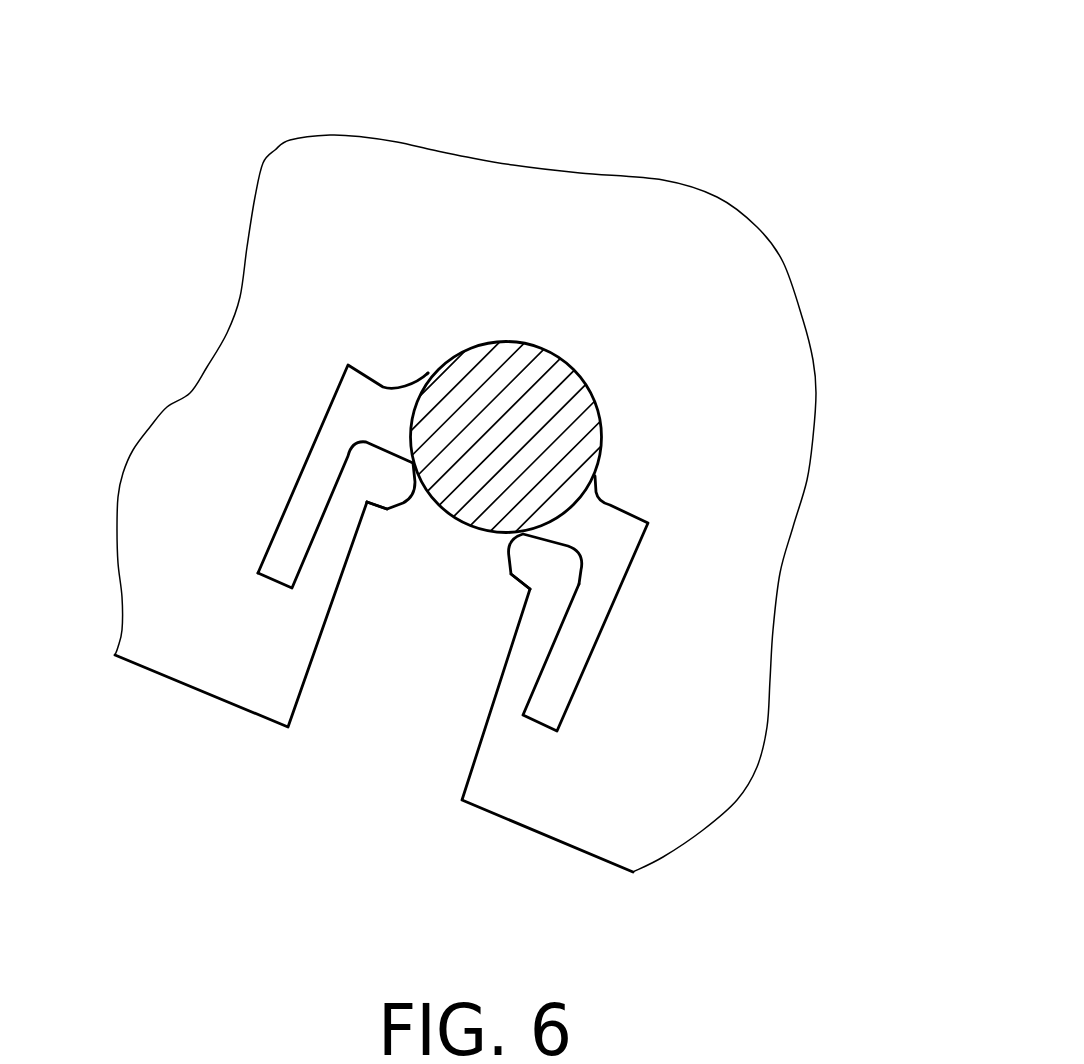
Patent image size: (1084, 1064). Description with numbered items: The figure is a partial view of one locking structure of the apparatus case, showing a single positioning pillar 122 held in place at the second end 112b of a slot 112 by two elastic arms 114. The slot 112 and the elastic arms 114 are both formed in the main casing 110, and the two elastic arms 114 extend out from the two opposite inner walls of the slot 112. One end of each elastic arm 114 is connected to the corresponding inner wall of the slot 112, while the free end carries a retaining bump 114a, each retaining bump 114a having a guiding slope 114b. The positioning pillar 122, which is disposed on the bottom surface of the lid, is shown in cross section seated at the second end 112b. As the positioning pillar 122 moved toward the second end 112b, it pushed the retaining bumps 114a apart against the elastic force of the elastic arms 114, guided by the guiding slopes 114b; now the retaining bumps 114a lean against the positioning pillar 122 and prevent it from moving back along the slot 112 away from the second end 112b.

The main casing 110 is at (745, 535).
The slot 112 is at (298, 695).
The second end 112b is at (562, 320).
The elastic arm 114 is at (327, 550).
The retaining bump 114a is at (383, 477).
The guiding slope 114b is at (398, 504).
The positioning pillar 122 is at (533, 433).